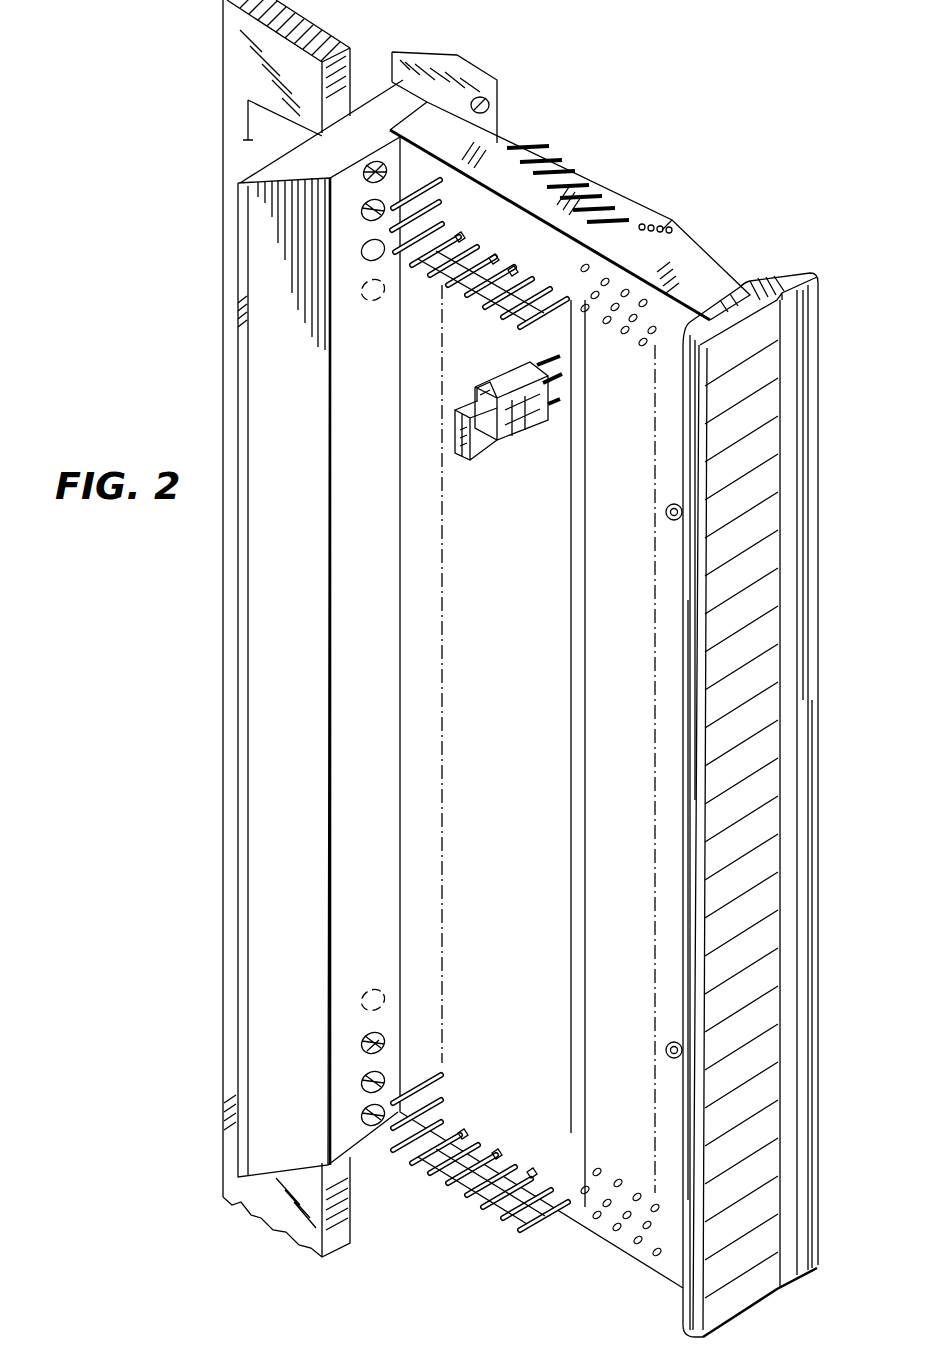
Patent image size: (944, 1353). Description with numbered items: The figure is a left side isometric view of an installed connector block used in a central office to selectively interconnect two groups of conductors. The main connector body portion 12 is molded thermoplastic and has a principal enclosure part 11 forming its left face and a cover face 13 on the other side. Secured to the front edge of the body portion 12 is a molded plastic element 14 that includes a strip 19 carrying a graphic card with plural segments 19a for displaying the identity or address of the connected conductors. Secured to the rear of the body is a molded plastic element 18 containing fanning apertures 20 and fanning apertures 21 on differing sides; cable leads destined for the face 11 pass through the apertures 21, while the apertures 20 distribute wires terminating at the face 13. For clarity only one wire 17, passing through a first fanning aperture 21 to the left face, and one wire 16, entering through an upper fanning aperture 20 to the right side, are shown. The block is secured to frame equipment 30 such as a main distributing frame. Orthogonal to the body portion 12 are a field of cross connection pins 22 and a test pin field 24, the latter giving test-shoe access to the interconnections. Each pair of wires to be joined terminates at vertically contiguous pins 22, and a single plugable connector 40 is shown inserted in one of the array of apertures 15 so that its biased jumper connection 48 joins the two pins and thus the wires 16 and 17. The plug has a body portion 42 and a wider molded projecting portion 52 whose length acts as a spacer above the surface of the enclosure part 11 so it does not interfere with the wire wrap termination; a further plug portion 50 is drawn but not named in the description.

The principal enclosure part 11 is at (502, 587).
The main connector body portion 12 is at (690, 272).
The cover face 13 is at (680, 243).
The molded plastic element 14 is at (783, 782).
The apertures 15 is at (494, 210).
The wire 16 is at (590, 175).
The wire 17 is at (246, 120).
The molded plastic element 18 is at (465, 73).
The strip 19 is at (765, 487).
The segments 19a is at (768, 332).
The fanning apertures 20 is at (492, 101).
The fanning apertures 21 is at (360, 163).
The cross connection pins 22 is at (530, 208).
The test pin field 24 is at (624, 289).
The frame equipment 30 is at (235, 36).
The plugable connector 40 is at (511, 424).
The body portion 42 is at (500, 432).
The jumper connection 48 is at (532, 420).
The spring latch 50 is at (495, 385).
The molded projecting portion 52 is at (540, 370).